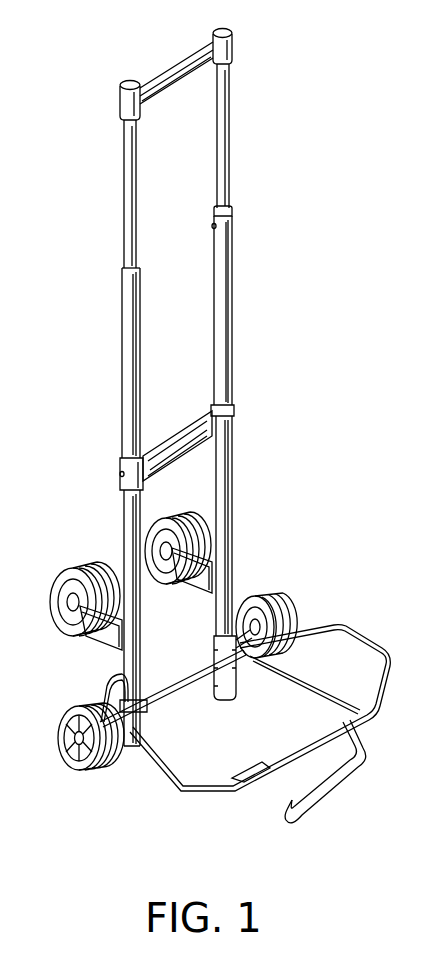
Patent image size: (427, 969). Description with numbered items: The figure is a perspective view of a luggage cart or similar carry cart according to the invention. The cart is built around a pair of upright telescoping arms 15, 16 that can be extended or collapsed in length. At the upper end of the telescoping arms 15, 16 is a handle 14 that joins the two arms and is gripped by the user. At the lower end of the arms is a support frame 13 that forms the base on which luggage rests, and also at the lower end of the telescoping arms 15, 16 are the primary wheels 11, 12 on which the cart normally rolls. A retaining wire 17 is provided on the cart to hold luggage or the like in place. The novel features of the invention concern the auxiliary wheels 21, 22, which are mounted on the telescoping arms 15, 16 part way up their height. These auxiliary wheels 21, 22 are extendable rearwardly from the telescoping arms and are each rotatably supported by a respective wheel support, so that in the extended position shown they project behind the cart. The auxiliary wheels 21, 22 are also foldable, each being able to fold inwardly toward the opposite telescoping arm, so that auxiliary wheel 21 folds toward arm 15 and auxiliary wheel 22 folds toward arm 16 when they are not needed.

The primary wheel 11 is at (77, 760).
The primary wheel 12 is at (283, 604).
The support frame 13 is at (258, 780).
The handle 14 is at (172, 72).
The telescoping arm 15 is at (229, 312).
The telescoping arm 16 is at (130, 371).
The retaining wire 17 is at (337, 793).
The auxiliary wheel 21 is at (58, 608).
The auxiliary wheel 22 is at (188, 520).